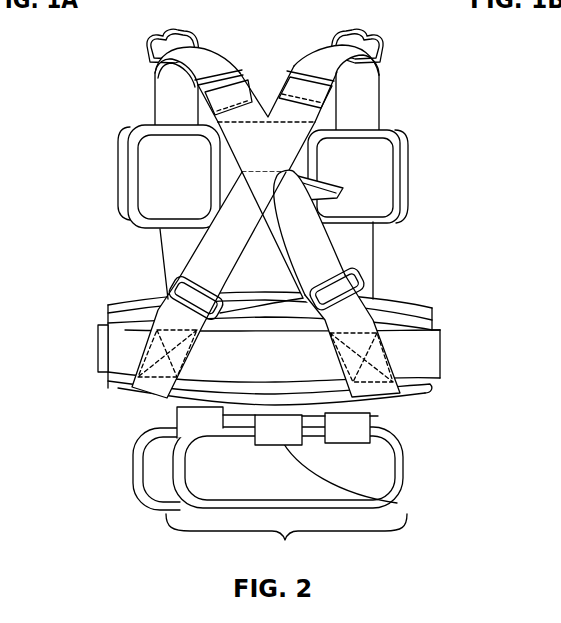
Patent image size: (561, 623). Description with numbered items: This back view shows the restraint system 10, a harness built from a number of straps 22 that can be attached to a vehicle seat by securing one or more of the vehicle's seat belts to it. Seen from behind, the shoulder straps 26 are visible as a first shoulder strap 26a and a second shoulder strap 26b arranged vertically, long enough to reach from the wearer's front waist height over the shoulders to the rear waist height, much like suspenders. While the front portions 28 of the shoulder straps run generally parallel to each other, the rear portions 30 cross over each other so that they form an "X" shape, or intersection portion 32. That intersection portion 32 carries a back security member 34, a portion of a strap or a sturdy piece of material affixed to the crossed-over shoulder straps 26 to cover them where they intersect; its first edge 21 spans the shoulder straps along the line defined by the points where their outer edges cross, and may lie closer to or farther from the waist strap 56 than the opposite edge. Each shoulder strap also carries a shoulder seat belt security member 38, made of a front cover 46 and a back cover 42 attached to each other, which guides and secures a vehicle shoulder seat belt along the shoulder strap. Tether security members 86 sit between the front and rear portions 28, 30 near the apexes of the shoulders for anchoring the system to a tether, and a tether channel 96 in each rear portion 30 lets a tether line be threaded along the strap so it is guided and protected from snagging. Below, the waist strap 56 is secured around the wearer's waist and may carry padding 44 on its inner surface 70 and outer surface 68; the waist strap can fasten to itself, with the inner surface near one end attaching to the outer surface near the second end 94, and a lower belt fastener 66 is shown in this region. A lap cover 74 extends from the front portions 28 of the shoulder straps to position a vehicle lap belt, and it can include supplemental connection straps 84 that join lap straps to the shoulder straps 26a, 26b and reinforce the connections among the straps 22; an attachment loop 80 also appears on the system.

The restraint system 10 is at (252, 284).
The first edge 21 is at (270, 170).
The straps 22 is at (160, 95).
The shoulder straps 26 is at (143, 347).
The first shoulder strap 26a is at (375, 242).
The second shoulder strap 26b is at (157, 258).
The front portions 28 is at (380, 96).
The rear portions 30 is at (212, 262).
The intersection portion 32 is at (267, 116).
The back security member 34 is at (254, 162).
The shoulder seat belt security member 38 is at (138, 217).
The back cover 42 is at (373, 188).
The padding 44 is at (380, 473).
The front cover 46 is at (128, 138).
The waist strap 56 is at (100, 327).
The lower belt fastener 66 is at (113, 388).
The outer surface 68 is at (420, 395).
The inner surface 70 is at (242, 305).
The lap cover 74 is at (286, 541).
The attachment loop 80 is at (137, 470).
The supplemental connection straps 84 is at (400, 503).
The tether security members 86 is at (358, 32).
The second end 94 is at (145, 297).
The tether channel 96 is at (251, 78).